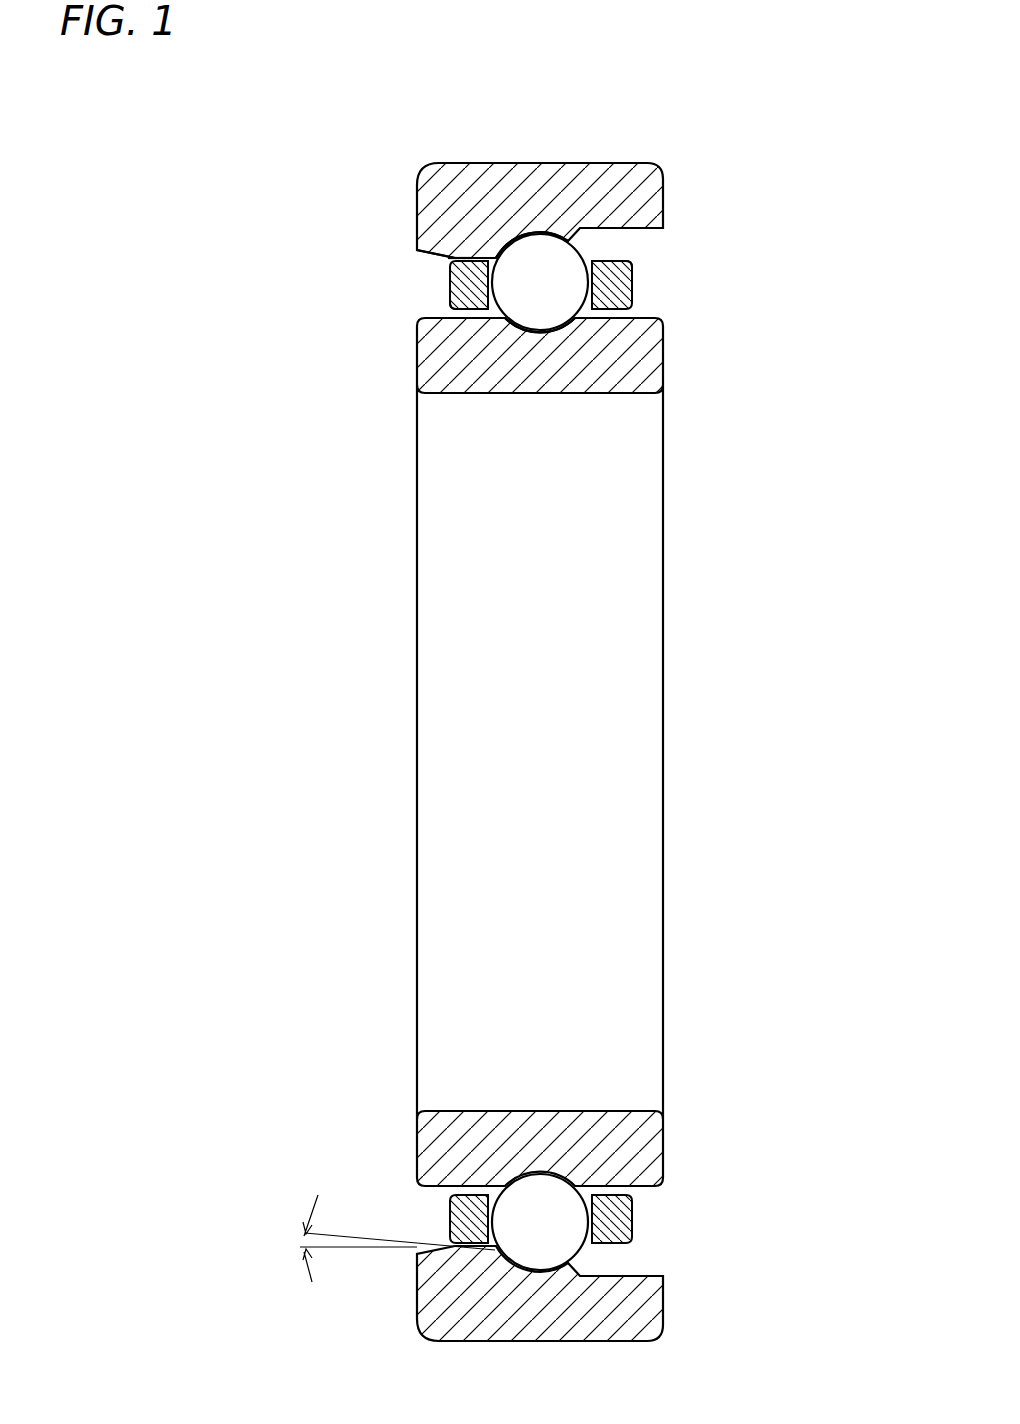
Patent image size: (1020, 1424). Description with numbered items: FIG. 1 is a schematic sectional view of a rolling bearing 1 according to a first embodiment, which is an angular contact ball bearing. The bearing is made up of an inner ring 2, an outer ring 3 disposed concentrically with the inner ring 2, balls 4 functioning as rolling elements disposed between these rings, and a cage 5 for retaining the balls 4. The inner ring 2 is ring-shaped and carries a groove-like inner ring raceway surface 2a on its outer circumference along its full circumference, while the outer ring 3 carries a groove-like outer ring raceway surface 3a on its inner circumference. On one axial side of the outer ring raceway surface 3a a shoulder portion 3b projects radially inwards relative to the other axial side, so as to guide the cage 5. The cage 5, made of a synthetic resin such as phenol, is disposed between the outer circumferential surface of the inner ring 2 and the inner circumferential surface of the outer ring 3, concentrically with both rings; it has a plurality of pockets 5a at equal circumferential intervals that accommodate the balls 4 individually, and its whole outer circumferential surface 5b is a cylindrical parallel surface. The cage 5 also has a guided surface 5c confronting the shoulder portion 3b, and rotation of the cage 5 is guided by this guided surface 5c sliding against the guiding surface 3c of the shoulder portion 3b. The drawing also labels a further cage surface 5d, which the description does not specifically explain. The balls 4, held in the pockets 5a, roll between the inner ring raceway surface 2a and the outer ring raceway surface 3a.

The rolling bearing 1 is at (736, 154).
The inner ring 2 is at (440, 375).
The inner ring raceway surface 2a is at (548, 325).
The outer ring 3 is at (435, 192).
The outer ring raceway surface 3a is at (527, 237).
The shoulder portion 3b is at (462, 247).
The guiding surface 3c is at (452, 260).
The balls 4 is at (578, 258).
The cage 5 is at (618, 283).
The pockets 5a is at (587, 313).
The outer circumferential surface 5b is at (615, 260).
The guided surface 5c is at (455, 276).
The cage inner surface 5d is at (447, 311).